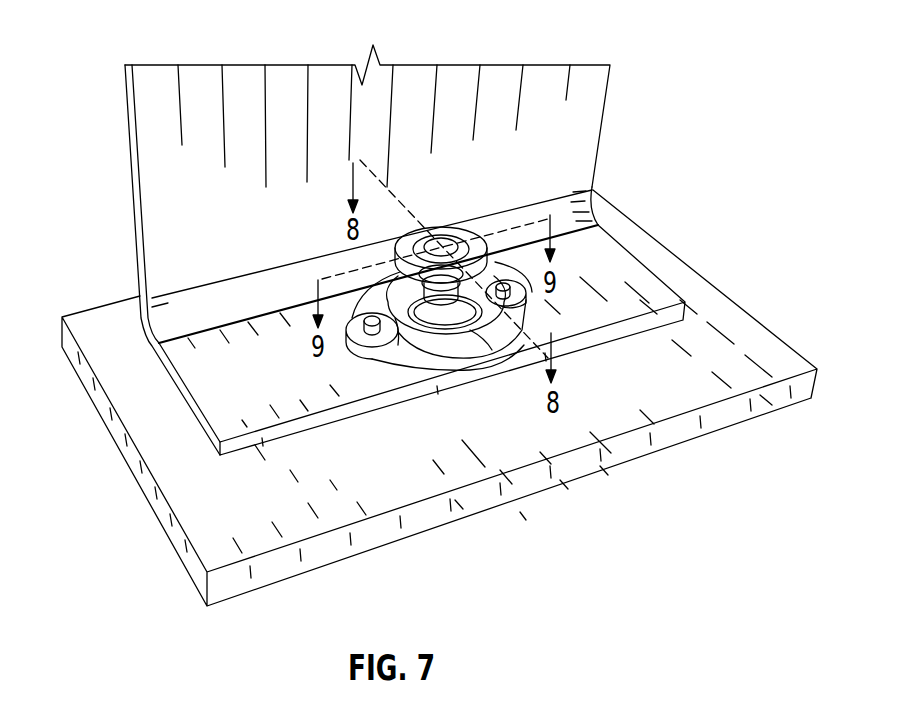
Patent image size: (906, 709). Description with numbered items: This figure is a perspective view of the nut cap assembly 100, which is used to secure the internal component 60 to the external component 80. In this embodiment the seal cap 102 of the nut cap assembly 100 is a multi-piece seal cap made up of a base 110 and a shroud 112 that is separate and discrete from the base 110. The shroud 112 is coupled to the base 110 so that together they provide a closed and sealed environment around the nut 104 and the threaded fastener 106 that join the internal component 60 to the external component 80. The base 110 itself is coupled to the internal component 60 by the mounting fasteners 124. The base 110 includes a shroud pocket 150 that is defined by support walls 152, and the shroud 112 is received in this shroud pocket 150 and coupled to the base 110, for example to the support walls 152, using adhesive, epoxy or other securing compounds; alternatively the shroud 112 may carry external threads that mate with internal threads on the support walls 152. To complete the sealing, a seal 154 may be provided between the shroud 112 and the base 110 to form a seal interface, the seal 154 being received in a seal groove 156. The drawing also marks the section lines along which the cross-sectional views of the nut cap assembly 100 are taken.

The internal component 60 is at (626, 266).
The external component 80 is at (737, 327).
The nut cap assembly 100 is at (456, 316).
The seal cap 102 is at (434, 215).
The nut 104 is at (505, 350).
The threaded fastener 106 is at (520, 332).
The base 110 is at (430, 340).
The shroud 112 is at (418, 232).
The mounting fasteners 124 is at (372, 332).
The shroud pocket 150 is at (380, 365).
The support walls 152 is at (387, 273).
The seal 154 is at (473, 330).
The seal groove 156 is at (400, 330).